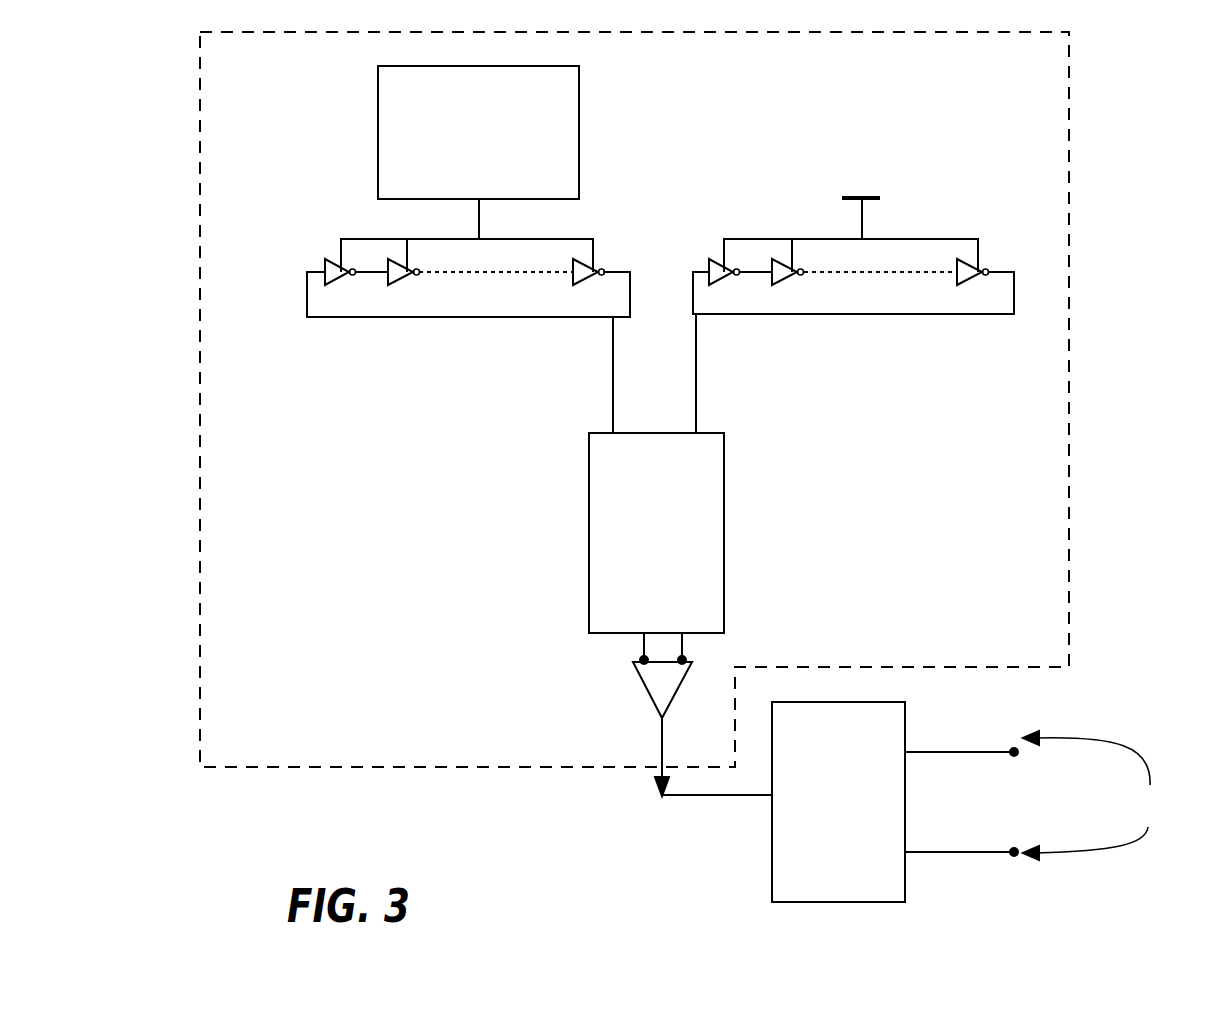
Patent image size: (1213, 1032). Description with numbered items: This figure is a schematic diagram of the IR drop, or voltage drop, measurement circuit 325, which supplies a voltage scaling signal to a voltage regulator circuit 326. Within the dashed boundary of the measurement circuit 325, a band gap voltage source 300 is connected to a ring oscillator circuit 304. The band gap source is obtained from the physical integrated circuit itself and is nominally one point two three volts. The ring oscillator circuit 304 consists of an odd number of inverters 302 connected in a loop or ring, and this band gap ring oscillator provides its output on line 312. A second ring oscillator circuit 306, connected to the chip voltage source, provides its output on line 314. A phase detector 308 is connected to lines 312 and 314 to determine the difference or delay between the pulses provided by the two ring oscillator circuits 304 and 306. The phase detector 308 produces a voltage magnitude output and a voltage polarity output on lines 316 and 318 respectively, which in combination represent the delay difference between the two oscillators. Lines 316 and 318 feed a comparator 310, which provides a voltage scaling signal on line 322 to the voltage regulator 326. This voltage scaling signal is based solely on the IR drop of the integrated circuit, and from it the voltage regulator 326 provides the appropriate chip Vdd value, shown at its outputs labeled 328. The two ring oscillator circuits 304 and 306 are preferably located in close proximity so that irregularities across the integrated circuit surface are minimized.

The band gap voltage source 300 is at (372, 109).
The inverters 302 is at (327, 262).
The ring oscillator circuit 304 is at (459, 304).
The second ring oscillator circuit 306 is at (852, 319).
The phase detector 308 is at (656, 533).
The comparator 310 is at (643, 692).
The line 312 is at (613, 397).
The line 314 is at (698, 390).
The line 316 is at (643, 652).
The line 318 is at (683, 647).
The line 322 is at (698, 800).
The IR drop measurement circuit 325 is at (634, 399).
The voltage regulator circuit 326 is at (838, 802).
The chip Vdd output 328 is at (1043, 795).